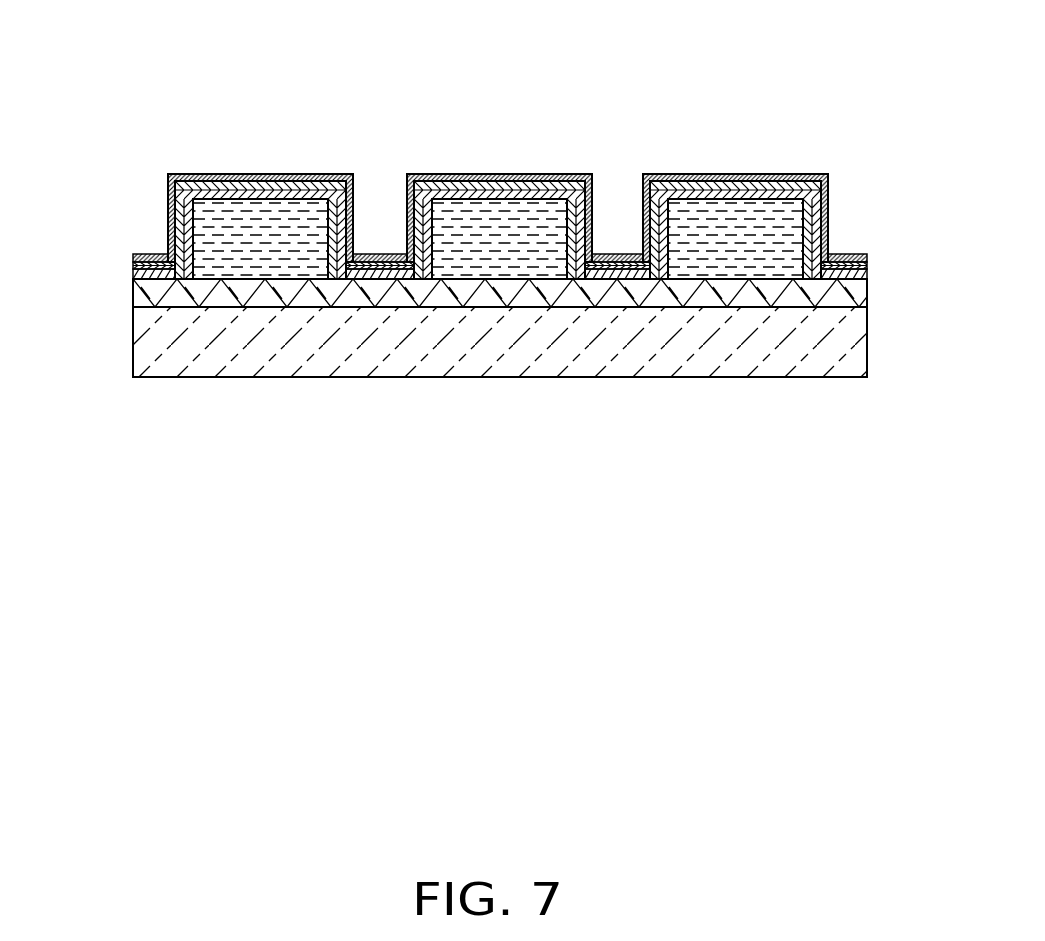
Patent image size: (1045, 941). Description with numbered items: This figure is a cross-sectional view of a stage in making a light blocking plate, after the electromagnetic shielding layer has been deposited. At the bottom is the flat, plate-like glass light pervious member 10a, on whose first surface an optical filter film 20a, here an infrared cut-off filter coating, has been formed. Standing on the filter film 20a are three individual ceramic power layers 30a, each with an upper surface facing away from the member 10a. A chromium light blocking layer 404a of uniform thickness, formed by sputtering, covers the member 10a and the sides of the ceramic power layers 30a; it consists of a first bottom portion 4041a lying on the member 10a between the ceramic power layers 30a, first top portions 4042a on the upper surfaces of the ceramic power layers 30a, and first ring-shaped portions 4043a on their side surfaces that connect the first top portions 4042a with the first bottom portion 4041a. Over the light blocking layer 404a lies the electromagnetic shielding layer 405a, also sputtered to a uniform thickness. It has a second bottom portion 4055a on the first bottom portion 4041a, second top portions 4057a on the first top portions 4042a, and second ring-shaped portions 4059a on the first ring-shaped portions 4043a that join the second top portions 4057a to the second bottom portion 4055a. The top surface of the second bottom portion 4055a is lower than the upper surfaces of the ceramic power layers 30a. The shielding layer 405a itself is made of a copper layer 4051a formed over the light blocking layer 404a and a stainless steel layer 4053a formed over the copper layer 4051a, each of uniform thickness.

The light pervious member 10a is at (773, 337).
The optical filter film 20a is at (848, 292).
The ceramic power layer 30a is at (473, 220).
The light blocking layer 404a is at (485, 363).
The first bottom portion 4041a is at (153, 272).
The first ring-shaped portion 4043a is at (190, 228).
The first top portion 4042a is at (248, 193).
The electromagnetic shielding layer 405a is at (193, 149).
The second bottom portion 4055a is at (150, 255).
The second ring-shaped portion 4059a is at (173, 235).
The second top portion 4057a is at (260, 181).
The stainless steel layer 4053a is at (708, 178).
The copper layer 4051a is at (748, 190).